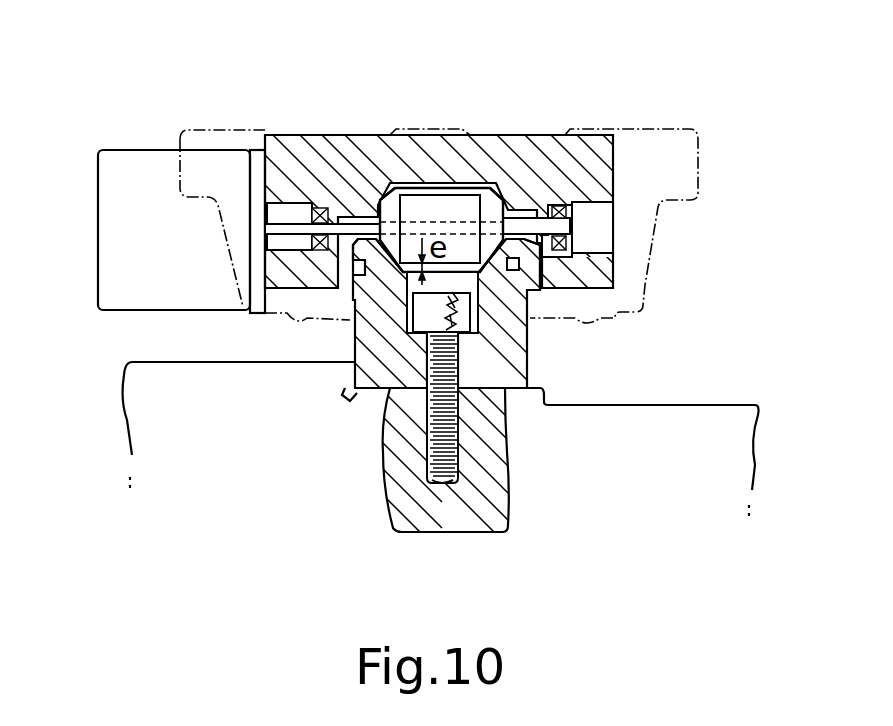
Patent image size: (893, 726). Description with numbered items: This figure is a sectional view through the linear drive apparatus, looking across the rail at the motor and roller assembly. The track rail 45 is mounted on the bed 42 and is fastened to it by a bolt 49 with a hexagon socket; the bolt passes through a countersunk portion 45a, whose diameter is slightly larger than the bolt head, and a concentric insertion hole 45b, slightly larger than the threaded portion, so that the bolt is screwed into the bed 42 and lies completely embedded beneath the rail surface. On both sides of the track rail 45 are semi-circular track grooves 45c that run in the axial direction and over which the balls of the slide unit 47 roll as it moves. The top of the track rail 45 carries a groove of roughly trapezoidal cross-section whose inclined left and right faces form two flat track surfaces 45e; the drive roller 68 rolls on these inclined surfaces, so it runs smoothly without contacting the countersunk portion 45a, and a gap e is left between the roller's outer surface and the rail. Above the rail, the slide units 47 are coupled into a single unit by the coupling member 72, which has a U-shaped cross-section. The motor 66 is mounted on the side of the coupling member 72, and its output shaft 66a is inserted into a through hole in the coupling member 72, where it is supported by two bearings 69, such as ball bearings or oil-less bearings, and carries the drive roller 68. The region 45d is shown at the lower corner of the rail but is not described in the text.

The bed 42 is at (717, 430).
The track rail 45 is at (530, 360).
The countersunk portion 45a is at (445, 312).
The insertion hole 45b is at (460, 423).
The track groove 45c is at (522, 280).
The lower notch 45d is at (365, 395).
The track surface 45e is at (381, 192).
The slide unit 47 is at (677, 128).
The bolt 49 is at (445, 474).
The motor 66 is at (122, 150).
The output shaft 66a is at (283, 225).
The drive roller 68 is at (437, 210).
The bearing 69 is at (320, 207).
The coupling member 72 is at (538, 160).